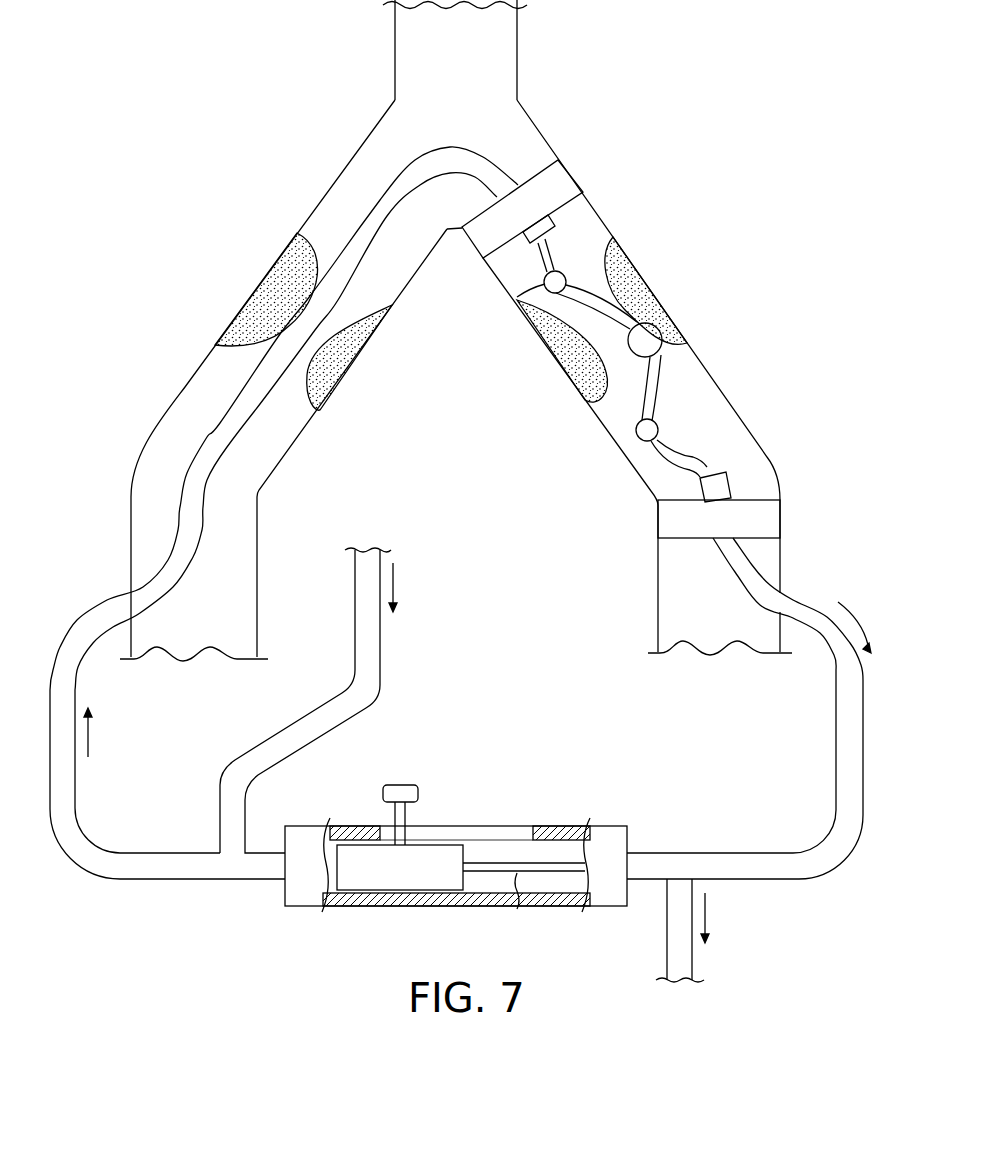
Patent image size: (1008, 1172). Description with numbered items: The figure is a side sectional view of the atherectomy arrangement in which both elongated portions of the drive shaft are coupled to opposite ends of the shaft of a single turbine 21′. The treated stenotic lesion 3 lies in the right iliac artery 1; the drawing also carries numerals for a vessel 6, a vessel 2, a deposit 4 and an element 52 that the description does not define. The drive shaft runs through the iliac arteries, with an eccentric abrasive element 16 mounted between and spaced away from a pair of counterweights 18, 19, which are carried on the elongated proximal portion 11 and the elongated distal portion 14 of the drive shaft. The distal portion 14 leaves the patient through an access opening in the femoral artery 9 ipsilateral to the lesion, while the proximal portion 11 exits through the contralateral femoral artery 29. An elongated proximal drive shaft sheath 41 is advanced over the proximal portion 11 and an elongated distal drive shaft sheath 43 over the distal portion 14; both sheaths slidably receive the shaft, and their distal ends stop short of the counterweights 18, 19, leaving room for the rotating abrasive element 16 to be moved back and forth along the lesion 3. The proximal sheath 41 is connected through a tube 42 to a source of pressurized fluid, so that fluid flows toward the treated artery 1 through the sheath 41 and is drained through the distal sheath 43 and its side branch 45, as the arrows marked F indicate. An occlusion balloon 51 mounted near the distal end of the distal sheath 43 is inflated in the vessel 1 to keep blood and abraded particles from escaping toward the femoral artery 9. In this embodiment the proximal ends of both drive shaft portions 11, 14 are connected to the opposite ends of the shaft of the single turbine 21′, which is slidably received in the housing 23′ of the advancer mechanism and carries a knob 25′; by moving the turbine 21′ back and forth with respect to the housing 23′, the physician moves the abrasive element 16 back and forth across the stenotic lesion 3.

The trachea 6 is at (519, 22).
The left bronchus 2 is at (192, 376).
The right iliac artery 1 is at (709, 374).
The stenotic lesion 3 is at (637, 268).
The mucus / secretion deposit 4 is at (352, 352).
The femoral artery 9 is at (657, 630).
The femoral artery 29 is at (258, 637).
The elongated proximal drive shaft sheath 41 is at (108, 598).
The tube 42 is at (381, 683).
The elongated distal drive shaft sheath 43 is at (836, 725).
The side branch 45 is at (667, 957).
The occlusion balloon 51 is at (660, 516).
The proximal sealing element / valve housing 52 is at (565, 173).
The elongated proximal portion of the drive shaft 11 is at (557, 247).
The elongated distal portion of the drive shaft 14 is at (705, 460).
The eccentric abrasive element 16 is at (657, 333).
The counterweight 18 is at (517, 297).
The counterweight 19 is at (636, 432).
The single turbine 21′ is at (448, 883).
The housing of the advancer mechanism 23′ is at (548, 828).
The actuating knob 25′ is at (398, 784).